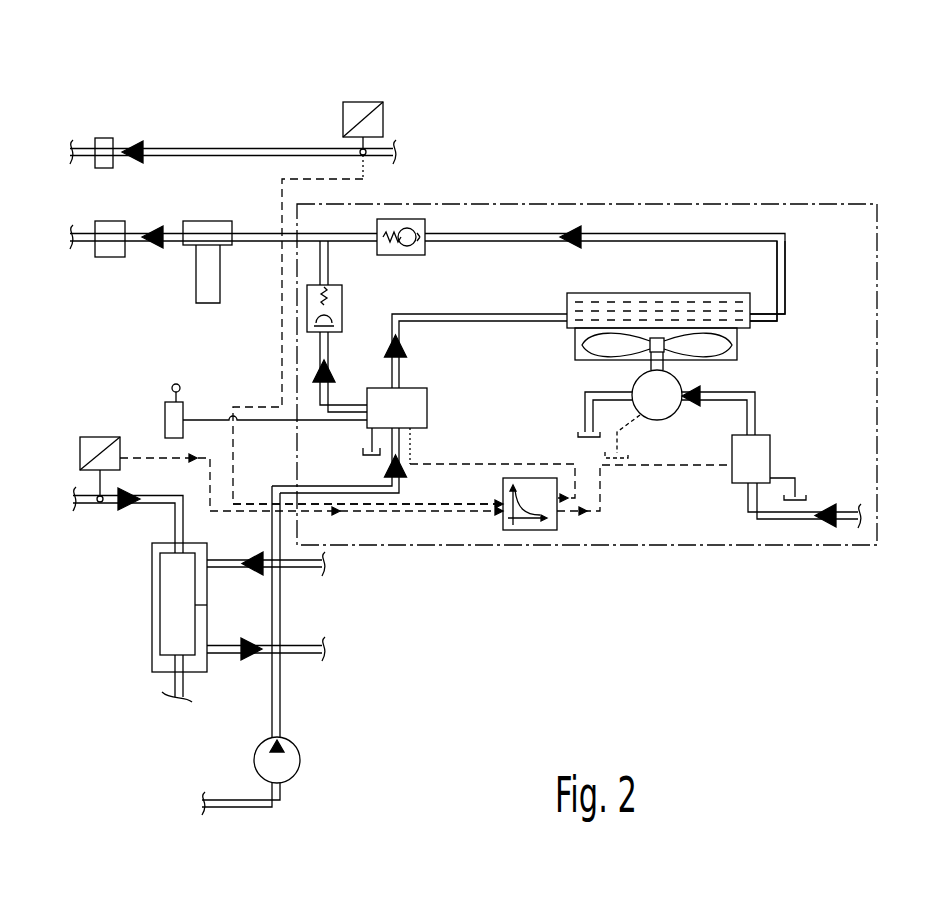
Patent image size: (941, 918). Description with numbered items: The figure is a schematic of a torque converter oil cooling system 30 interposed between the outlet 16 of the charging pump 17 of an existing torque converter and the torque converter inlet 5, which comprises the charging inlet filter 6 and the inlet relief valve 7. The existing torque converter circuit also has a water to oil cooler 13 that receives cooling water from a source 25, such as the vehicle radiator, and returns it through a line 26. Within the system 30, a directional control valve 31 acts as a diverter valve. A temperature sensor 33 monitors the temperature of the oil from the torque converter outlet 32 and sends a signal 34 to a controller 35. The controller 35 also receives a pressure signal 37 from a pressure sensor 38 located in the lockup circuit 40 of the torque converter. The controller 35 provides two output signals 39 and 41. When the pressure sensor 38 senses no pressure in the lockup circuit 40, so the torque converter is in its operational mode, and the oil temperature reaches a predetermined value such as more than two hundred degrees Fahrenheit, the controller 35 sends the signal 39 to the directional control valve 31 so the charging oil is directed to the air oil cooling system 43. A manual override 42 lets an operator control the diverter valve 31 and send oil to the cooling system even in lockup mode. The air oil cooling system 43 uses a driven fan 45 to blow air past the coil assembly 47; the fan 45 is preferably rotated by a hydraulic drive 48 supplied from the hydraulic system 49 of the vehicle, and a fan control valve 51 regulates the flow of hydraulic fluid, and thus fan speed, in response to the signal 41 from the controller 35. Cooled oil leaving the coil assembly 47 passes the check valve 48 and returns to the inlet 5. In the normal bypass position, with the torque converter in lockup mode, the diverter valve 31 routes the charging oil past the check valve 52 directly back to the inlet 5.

The torque converter inlet 5 is at (262, 233).
The charging inlet filter 6 is at (196, 288).
The inlet relief valve 7 is at (100, 221).
The water to oil cooler 13 is at (152, 635).
The outlet of the charging oil pump 16 is at (283, 723).
The charging pump 17 is at (303, 760).
The cooling water source 25 is at (322, 548).
The line 26 is at (303, 655).
The torque converter oil cooling system 30 is at (638, 150).
The directional control valve 31 is at (408, 388).
The torque converter outlet 32 is at (78, 507).
The temperature sensor 33 is at (100, 437).
The signal 34 is at (443, 513).
The controller 35 is at (530, 531).
The pressure signal 37 is at (290, 178).
The pressure sensor 38 is at (365, 102).
The output signal 39 is at (473, 464).
The lockup circuit 40 is at (208, 146).
The output signal 41 is at (607, 502).
The manual override 42 is at (183, 403).
The air oil cooling system 43 is at (757, 300).
The fan 45 is at (737, 347).
The coil assembly 47 is at (640, 300).
The hydraulic drive / check valve 48 is at (402, 219).
The hydraulic system of the vehicle 49 is at (845, 505).
The fan control valve 51 is at (760, 433).
The check valve 52 is at (342, 296).